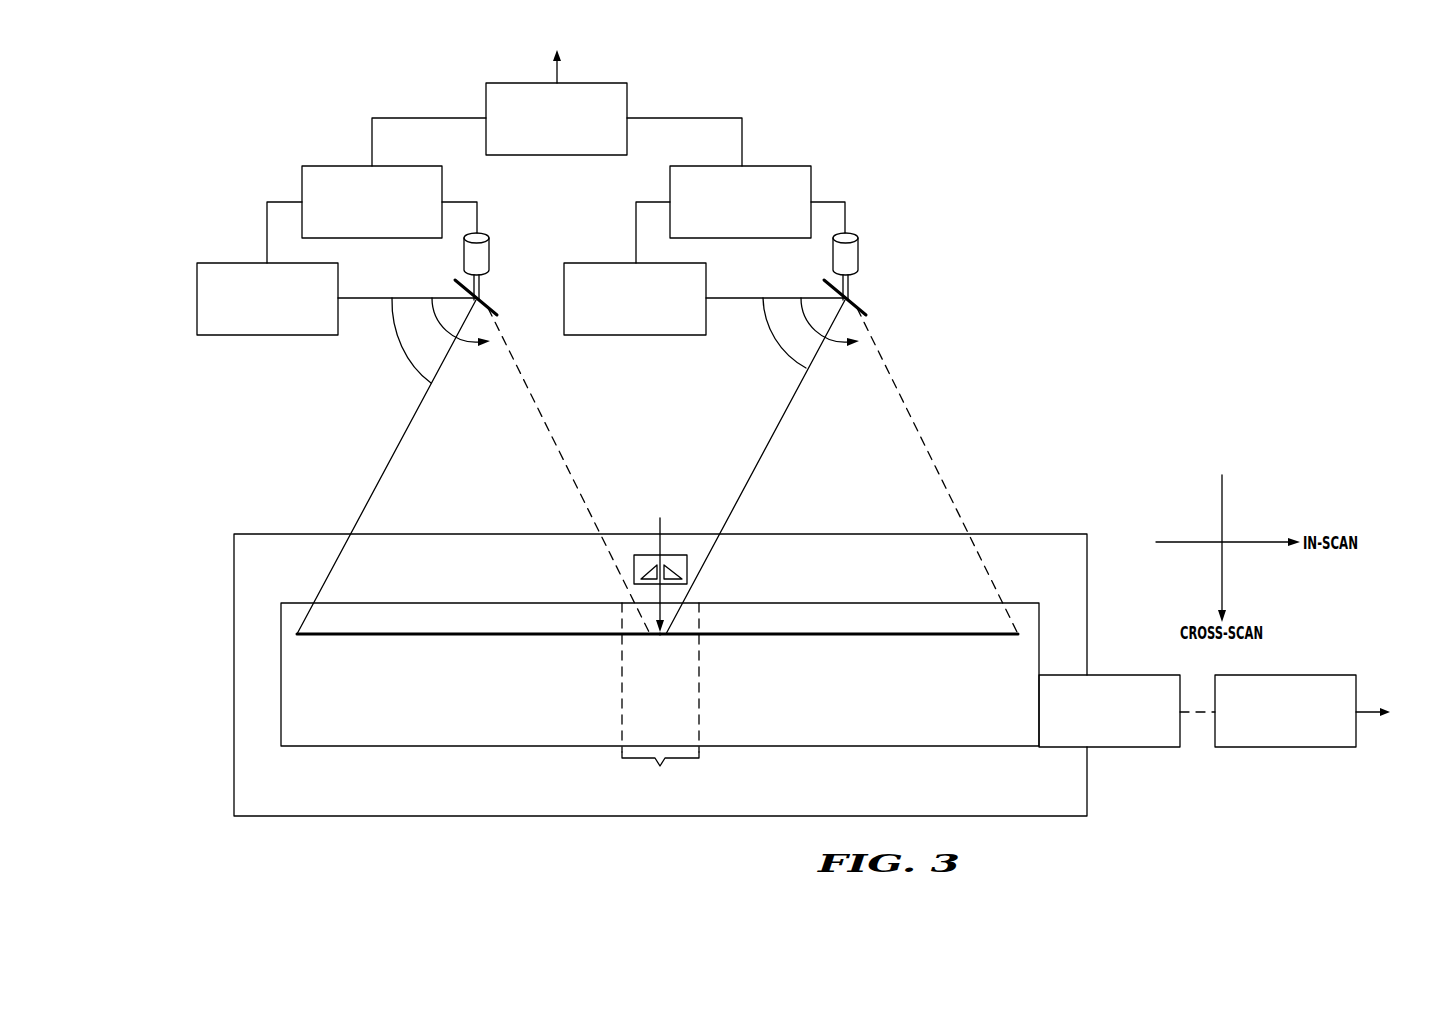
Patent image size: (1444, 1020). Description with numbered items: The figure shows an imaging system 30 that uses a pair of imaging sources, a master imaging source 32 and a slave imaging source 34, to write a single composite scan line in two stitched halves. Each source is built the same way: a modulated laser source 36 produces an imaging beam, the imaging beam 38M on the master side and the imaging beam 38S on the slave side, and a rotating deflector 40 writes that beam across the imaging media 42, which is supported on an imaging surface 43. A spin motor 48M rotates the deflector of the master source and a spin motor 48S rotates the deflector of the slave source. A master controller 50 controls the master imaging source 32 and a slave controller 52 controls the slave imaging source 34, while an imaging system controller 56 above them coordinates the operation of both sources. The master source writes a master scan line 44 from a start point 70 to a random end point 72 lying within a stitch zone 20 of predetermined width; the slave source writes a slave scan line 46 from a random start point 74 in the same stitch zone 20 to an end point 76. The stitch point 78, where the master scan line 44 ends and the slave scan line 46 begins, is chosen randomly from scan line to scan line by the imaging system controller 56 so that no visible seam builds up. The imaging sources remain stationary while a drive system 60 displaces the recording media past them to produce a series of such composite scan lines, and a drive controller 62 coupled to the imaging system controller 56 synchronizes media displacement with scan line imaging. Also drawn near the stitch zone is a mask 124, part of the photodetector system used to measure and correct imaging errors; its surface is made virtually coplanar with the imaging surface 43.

The stitch zone 20 is at (660, 701).
The imaging system 30 is at (921, 90).
The master imaging source 32 is at (397, 360).
The slave imaging source 34 is at (767, 360).
The modulated laser source 36 is at (217, 277).
The imaging beam 38M is at (407, 340).
The imaging beam 38S is at (773, 333).
The rotating deflector 40 is at (493, 307).
The imaging media 42 is at (364, 750).
The imaging surface 43 is at (272, 534).
The master scan line 44 is at (364, 636).
The slave scan line 46 is at (975, 636).
The spin motor 48M is at (480, 258).
The spin motor 48S is at (850, 258).
The master controller 50 is at (324, 176).
The slave controller 52 is at (789, 176).
The imaging system controller 56 is at (611, 95).
The drive system 60 is at (1157, 735).
The drive controller 62 is at (1332, 735).
The start point 70 is at (297, 636).
The random end point 72 is at (650, 636).
The random start point 74 is at (666, 636).
The end point 76 is at (1018, 636).
The stitch point 78 is at (664, 562).
The mask 124 is at (634, 562).